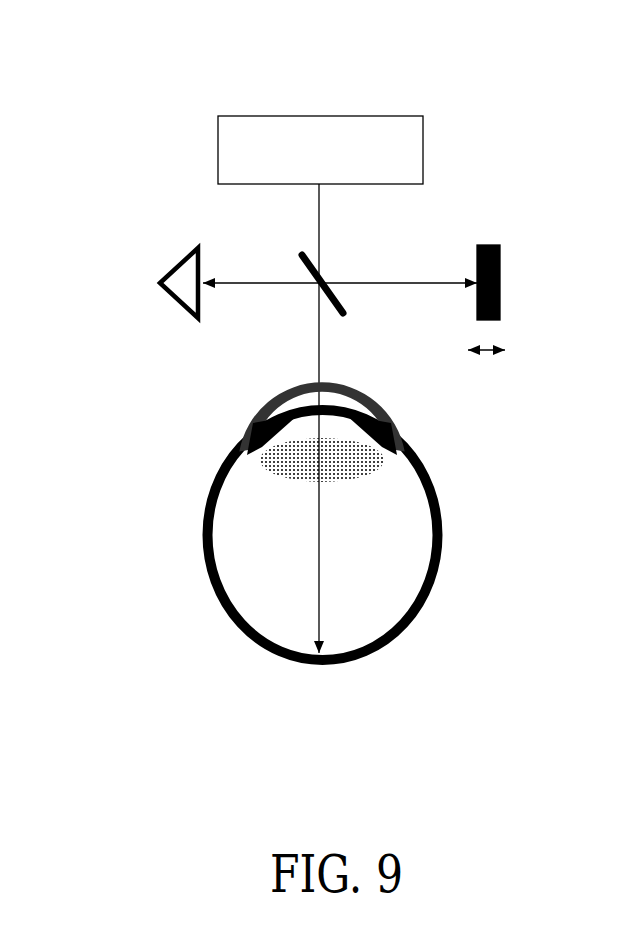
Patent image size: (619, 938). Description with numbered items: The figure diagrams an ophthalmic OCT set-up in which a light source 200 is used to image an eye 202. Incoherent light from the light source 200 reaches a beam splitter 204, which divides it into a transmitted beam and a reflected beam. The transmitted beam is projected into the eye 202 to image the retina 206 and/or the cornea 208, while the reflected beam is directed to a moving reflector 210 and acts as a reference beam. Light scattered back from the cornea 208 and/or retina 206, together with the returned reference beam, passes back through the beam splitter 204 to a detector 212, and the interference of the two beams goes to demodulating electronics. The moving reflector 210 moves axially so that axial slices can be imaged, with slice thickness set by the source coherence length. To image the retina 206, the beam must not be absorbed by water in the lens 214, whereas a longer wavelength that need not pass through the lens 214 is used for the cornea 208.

The light source 200 is at (315, 119).
The eye 202 is at (178, 572).
The beam splitter 204 is at (331, 277).
The retina 206 is at (310, 660).
The cornea 208 is at (245, 384).
The moving reflector 210 is at (503, 265).
The detector 212 is at (170, 267).
The lens 214 is at (373, 478).